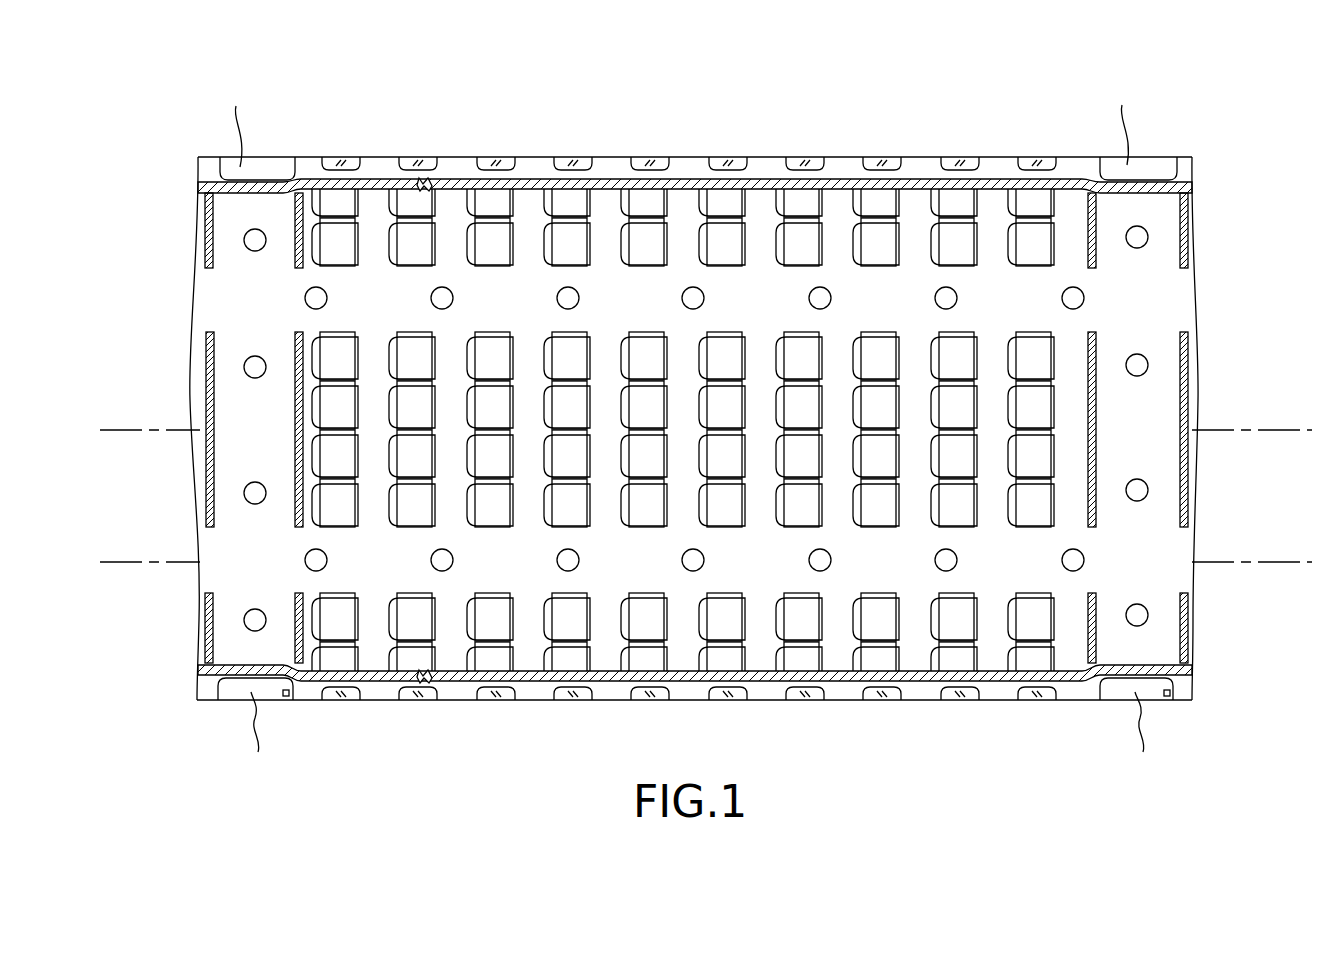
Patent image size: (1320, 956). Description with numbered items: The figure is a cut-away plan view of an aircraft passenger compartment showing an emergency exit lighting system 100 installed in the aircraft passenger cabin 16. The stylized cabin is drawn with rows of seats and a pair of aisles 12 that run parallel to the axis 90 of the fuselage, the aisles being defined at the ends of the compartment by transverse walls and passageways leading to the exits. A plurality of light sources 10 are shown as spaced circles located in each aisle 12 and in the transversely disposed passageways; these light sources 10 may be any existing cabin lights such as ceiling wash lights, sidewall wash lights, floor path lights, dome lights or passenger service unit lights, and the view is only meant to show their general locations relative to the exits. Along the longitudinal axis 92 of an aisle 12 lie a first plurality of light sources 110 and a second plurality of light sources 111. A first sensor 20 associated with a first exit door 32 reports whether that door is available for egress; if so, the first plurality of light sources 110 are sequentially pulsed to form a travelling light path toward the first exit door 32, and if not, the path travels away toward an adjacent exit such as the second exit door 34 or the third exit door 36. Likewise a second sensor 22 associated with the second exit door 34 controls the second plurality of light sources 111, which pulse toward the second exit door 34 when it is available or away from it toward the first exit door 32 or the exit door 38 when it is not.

The emergency exit lighting system 100 is at (388, 122).
The light sources 10 is at (305, 298).
The aisles 12 is at (765, 316).
The aircraft passenger cabin 16 is at (778, 440).
The first sensor 20 is at (289, 696).
The second sensor 22 is at (1167, 696).
The first exit door 32 is at (237, 692).
The second exit door 34 is at (1118, 692).
The third exit door 36 is at (283, 163).
The exit door 38 is at (1162, 165).
The axis of the fuselage 90 is at (158, 430).
The longitudinal axis of aisle 92 is at (158, 562).
The first plurality of light sources 110 is at (318, 572).
The second plurality of light sources 111 is at (944, 571).